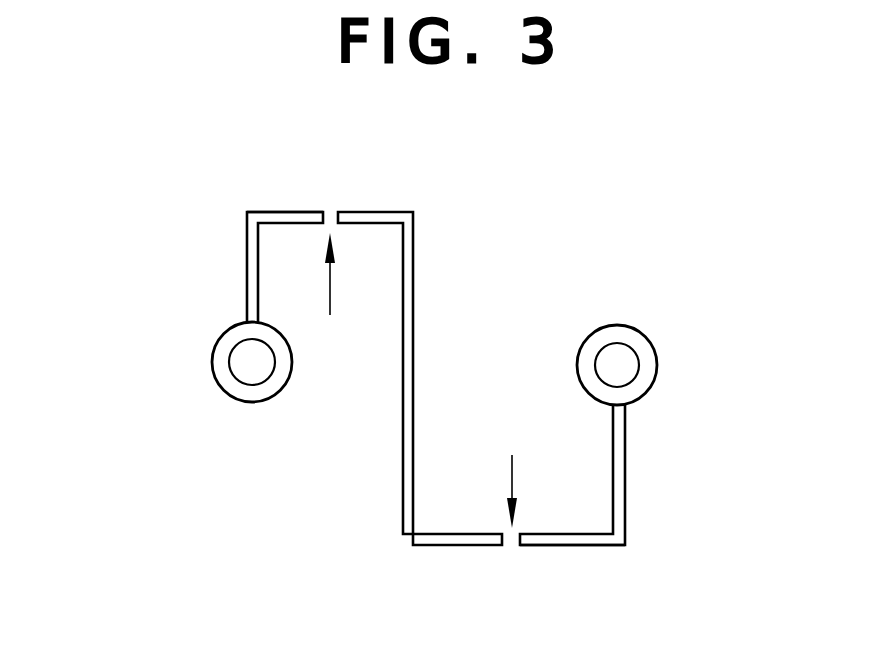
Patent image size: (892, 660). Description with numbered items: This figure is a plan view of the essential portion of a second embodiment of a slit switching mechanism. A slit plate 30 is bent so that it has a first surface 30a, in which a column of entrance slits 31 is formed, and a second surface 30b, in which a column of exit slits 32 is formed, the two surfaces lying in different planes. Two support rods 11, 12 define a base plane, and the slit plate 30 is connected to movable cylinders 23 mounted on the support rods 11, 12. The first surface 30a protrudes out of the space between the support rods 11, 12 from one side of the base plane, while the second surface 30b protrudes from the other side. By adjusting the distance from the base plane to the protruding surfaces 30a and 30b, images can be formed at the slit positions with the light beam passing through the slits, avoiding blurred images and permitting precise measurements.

The slit plate 30 is at (228, 240).
The first surface 30a is at (277, 212).
The second surface 30b is at (600, 547).
The entrance slits 31 is at (332, 212).
The exit slits 32 is at (509, 547).
The movable cylinders 23 is at (212, 363).
The support rod 12 is at (250, 372).
The support rod 11 is at (623, 367).